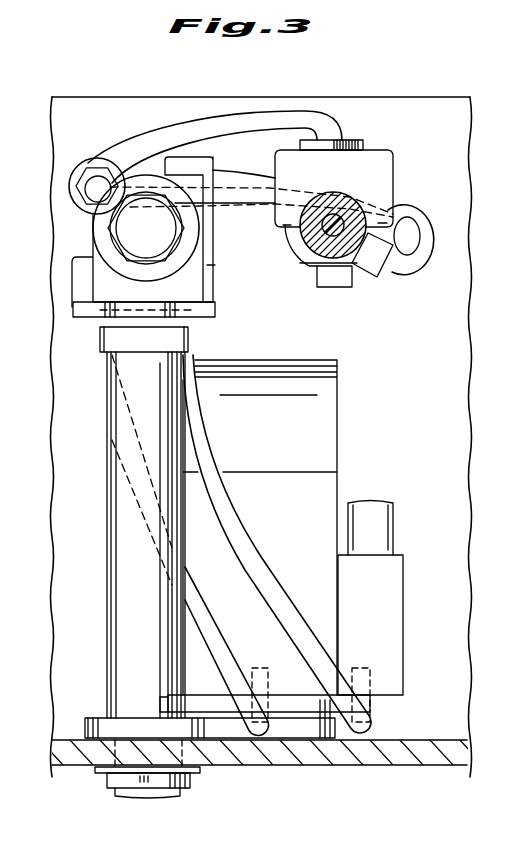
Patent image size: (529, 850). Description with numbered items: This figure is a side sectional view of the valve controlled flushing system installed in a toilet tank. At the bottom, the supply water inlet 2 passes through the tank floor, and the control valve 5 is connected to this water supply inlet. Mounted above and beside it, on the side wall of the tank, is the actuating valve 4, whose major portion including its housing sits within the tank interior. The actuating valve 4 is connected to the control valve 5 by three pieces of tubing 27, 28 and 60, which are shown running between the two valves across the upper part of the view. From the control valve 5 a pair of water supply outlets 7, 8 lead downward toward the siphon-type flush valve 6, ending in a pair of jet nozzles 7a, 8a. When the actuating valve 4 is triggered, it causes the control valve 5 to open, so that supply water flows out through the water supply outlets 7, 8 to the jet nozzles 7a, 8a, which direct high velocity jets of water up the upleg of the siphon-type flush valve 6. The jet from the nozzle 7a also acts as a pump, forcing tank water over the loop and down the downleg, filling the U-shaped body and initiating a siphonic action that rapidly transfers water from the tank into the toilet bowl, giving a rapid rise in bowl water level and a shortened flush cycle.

The supply water inlet 2 is at (145, 796).
The actuating valve 4 is at (393, 170).
The control valve 5 is at (215, 267).
The siphon-type flush valve 6 is at (349, 440).
The water supply outlet 7 is at (212, 645).
The jet nozzle 7a is at (262, 668).
The water supply outlet 8 is at (252, 555).
The jet nozzle 8a is at (362, 668).
The tubing 27 is at (250, 178).
The tubing 28 is at (430, 253).
The tubing 60 is at (344, 120).